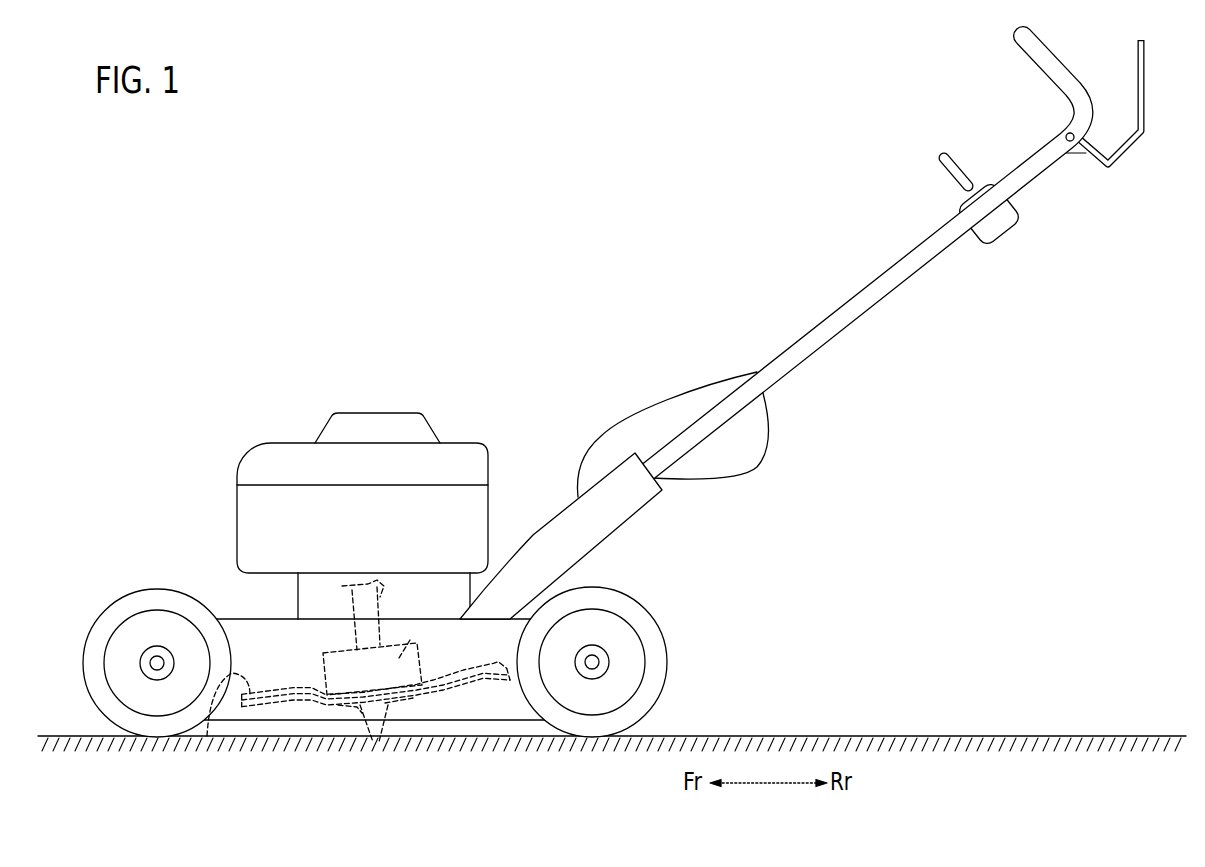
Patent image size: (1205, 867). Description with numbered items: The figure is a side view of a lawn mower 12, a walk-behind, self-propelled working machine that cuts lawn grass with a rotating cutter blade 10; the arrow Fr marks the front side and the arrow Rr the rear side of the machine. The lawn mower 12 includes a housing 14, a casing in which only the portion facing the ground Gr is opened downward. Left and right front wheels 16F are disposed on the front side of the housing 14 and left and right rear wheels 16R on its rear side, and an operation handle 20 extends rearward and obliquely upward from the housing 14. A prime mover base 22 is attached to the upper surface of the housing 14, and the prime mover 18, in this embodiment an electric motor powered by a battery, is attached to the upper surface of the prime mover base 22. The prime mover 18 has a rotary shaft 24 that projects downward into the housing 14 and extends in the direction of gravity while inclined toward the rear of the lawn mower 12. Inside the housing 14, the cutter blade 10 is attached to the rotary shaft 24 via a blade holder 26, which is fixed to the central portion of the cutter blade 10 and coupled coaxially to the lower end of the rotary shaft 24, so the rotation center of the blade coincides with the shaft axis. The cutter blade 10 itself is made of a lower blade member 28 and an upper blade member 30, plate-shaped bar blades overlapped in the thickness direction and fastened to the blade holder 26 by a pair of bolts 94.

The lawn mower 12 is at (251, 143).
The housing 14 is at (245, 638).
The front wheels 16F is at (137, 597).
The rear wheels 16R is at (645, 607).
The prime mover 18 is at (280, 457).
The operation handle 20 is at (1037, 47).
The prime mover base 22 is at (308, 600).
The cutter blade 10 is at (333, 650).
The rotary shaft 24 is at (385, 590).
The blade holder 26 is at (410, 640).
The lower blade member 28 is at (477, 684).
The upper blade member 30 is at (207, 736).
The bolts 94 is at (376, 745).
The ground Gr is at (1040, 734).